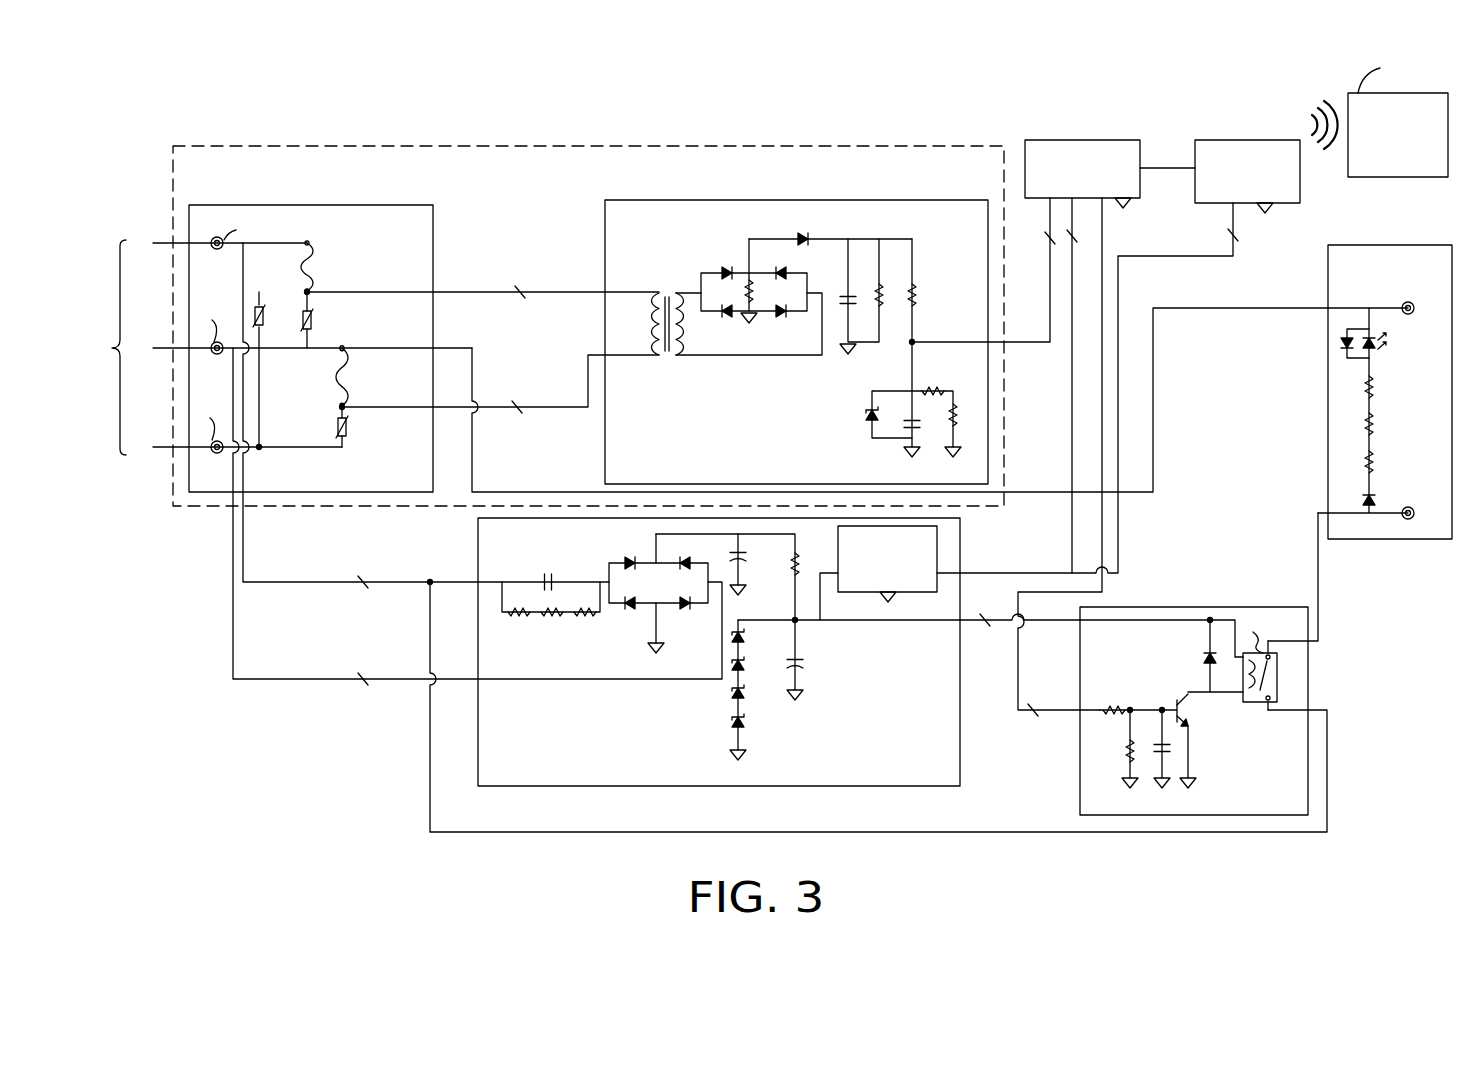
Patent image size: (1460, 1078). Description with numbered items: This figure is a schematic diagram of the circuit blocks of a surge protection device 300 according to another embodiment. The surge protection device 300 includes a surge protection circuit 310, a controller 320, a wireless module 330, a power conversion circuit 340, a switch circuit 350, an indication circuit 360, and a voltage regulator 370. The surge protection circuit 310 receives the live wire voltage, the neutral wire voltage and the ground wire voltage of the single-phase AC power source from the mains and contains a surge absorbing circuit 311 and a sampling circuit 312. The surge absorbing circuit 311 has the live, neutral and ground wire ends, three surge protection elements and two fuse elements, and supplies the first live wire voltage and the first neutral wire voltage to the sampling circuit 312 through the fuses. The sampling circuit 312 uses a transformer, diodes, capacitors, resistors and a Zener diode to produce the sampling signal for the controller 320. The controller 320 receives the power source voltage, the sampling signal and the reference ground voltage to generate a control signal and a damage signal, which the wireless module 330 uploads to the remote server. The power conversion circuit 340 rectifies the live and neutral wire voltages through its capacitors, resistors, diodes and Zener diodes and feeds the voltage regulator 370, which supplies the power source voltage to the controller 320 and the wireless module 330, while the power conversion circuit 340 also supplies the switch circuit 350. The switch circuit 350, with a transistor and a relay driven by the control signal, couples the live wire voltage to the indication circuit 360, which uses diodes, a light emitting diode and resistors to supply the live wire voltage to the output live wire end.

The surge protection device 300 is at (1405, 841).
The surge protection circuit 310 is at (600, 146).
The surge absorbing circuit 311 is at (350, 205).
The sampling circuit 312 is at (705, 200).
The controller 320 is at (1082, 140).
The wireless module 330 is at (1260, 140).
The power conversion circuit 340 is at (672, 786).
The switch circuit 350 is at (1170, 607).
The indication circuit 360 is at (1397, 245).
The voltage regulator 370 is at (940, 556).